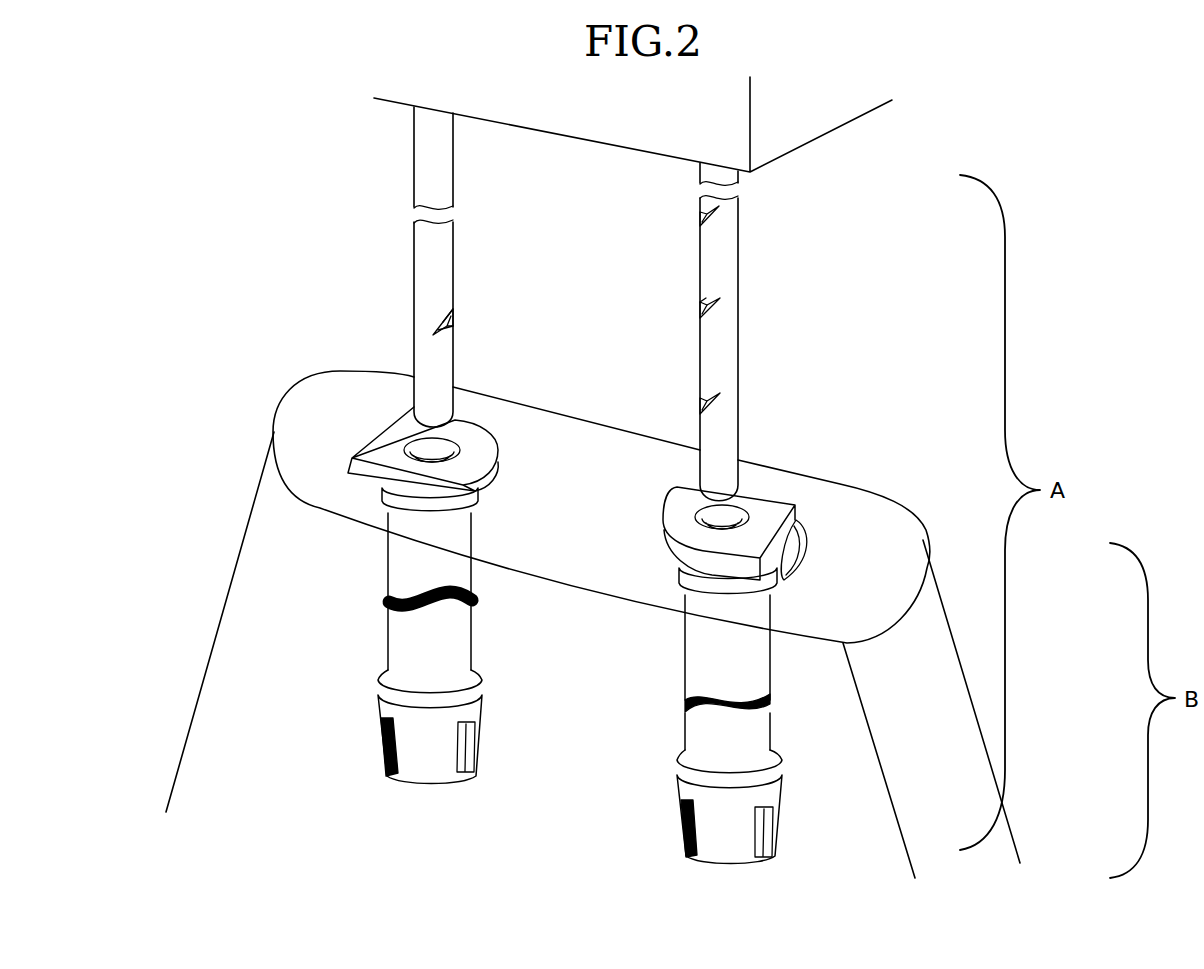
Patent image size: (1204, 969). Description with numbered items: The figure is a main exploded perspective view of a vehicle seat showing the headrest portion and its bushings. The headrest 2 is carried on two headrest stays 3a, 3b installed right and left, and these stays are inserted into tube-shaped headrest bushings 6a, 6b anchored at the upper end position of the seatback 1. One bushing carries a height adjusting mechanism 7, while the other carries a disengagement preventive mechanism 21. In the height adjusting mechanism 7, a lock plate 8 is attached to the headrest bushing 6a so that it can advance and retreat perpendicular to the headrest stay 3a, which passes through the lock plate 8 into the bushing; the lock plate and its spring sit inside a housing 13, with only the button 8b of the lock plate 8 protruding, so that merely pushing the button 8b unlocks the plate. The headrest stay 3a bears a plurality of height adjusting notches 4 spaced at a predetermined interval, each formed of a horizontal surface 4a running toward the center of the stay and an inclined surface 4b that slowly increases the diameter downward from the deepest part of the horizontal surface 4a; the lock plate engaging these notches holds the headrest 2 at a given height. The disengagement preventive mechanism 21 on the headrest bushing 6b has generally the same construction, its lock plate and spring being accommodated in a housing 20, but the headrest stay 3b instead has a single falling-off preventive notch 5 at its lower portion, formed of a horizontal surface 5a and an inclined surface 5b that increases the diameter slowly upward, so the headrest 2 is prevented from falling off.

The seatback 1 is at (350, 372).
The headrest 2 is at (565, 122).
The headrest stay 3a is at (733, 247).
The headrest stay 3b is at (437, 252).
The height adjusting notches 4 is at (700, 218).
The horizontal surface 4a is at (700, 292).
The inclined surface 4b is at (700, 305).
The falling-off preventive notch 5 is at (512, 303).
The horizontal surface 5a is at (455, 324).
The inclined surface 5b is at (458, 312).
The headrest bushing 6a is at (718, 645).
The headrest bushing 6b is at (414, 552).
The height adjusting mechanism 7 is at (744, 483).
The lock plate 8 is at (803, 522).
The button 8b is at (795, 548).
The housing 13 is at (686, 524).
The housing 20 is at (393, 443).
The disengagement preventive mechanism 21 is at (306, 461).